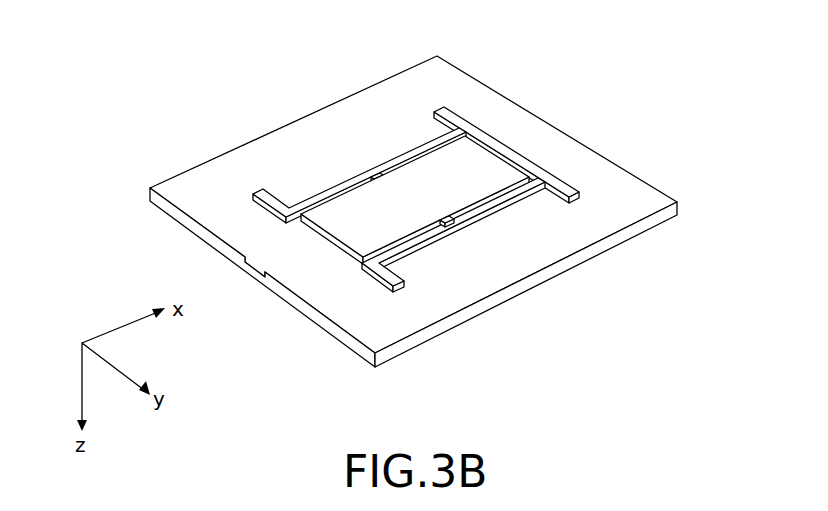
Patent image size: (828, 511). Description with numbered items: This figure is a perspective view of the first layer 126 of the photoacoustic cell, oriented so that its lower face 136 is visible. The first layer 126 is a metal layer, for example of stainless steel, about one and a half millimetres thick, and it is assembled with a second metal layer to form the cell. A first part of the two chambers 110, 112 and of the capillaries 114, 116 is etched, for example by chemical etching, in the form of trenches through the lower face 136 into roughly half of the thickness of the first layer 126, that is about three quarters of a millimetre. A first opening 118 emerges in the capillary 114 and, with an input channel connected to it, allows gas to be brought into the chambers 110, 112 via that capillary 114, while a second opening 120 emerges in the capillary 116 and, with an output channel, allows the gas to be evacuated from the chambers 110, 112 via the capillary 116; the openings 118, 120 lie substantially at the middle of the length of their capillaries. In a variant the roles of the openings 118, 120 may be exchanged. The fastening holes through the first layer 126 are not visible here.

The chamber 110 is at (342, 252).
The chamber 112 is at (487, 140).
The capillary 114 is at (340, 188).
The capillary 116 is at (390, 247).
The first opening 118 is at (375, 175).
The second opening 120 is at (447, 217).
The first layer 126 is at (435, 211).
The lower face 136 is at (556, 239).